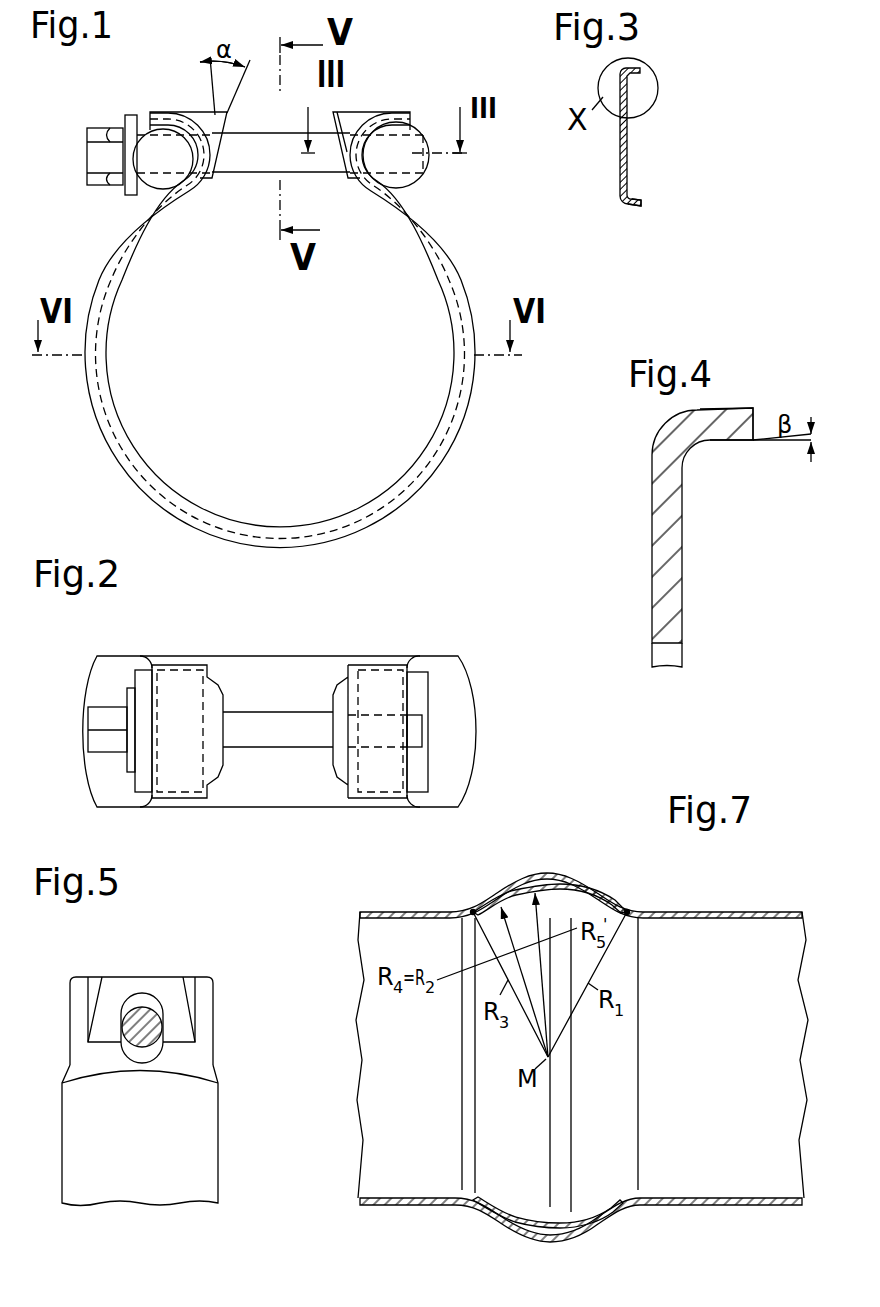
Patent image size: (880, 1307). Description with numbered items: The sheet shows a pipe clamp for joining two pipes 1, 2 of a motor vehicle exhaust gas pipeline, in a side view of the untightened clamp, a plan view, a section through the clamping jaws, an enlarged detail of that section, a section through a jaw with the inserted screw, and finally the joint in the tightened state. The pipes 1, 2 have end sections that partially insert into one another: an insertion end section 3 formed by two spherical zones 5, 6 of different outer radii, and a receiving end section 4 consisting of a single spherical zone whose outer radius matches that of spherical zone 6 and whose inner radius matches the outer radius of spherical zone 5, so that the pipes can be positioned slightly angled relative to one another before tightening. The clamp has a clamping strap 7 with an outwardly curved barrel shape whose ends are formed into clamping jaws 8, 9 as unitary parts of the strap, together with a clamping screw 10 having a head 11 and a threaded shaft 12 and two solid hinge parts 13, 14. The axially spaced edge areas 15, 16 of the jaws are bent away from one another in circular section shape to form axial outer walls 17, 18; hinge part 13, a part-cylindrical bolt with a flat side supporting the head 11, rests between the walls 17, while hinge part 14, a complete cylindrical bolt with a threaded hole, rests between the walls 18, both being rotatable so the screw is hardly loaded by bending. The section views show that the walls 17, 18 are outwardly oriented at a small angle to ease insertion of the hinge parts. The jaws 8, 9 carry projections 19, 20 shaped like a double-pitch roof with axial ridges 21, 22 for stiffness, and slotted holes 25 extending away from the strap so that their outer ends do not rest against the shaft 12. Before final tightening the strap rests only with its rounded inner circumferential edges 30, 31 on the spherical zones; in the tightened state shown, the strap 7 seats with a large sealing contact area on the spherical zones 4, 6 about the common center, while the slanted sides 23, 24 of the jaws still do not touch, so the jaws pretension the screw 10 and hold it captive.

In FIG. 7, the pipe 1 is at (418, 910).
In FIG. 7, the pipe 2 is at (731, 893).
In FIG. 7, the insertion end section 3 is at (601, 888).
In FIG. 7, the receiving end section 4 is at (513, 889).
In FIG. 7, the spherical zone 5 is at (508, 897).
In FIG. 7, the spherical zone 6 is at (577, 888).
In FIG. 1, the clamping strap 7 is at (476, 427).
In FIG. 2, the clamping strap 7 is at (309, 655).
In FIG. 5, the clamping strap 7 is at (229, 1170).
In FIG. 7, the clamping strap 7 is at (542, 873).
In FIG. 1, the clamping jaw 8 is at (171, 109).
In FIG. 2, the clamping jaw 8 is at (181, 660).
In FIG. 5, the clamping jaw 8 is at (69, 1018).
In FIG. 1, the clamping jaw 9 is at (384, 107).
In FIG. 3, the clamping jaw 9 is at (619, 171).
In FIG. 4, the clamping jaw 9 is at (652, 539).
In FIG. 2, the clamping jaw 9 is at (402, 660).
In FIG. 1, the clamping screw 10 is at (228, 189).
In FIG. 2, the clamping screw 10 is at (241, 700).
In FIG. 1, the head 11 is at (122, 130).
In FIG. 2, the head 11 is at (105, 707).
In FIG. 1, the shaft 12 is at (217, 138).
In FIG. 2, the shaft 12 is at (296, 712).
In FIG. 5, the shaft 12 is at (121, 1050).
In FIG. 1, the hinge part 13 is at (160, 175).
In FIG. 1, the hinge part 14 is at (413, 185).
In FIG. 1, the edge area 15 is at (200, 127).
In FIG. 2, the edge area 15 is at (210, 668).
In FIG. 5, the edge area 15 is at (77, 977).
In FIG. 1, the edge area 16 is at (342, 157).
In FIG. 2, the edge area 16 is at (335, 665).
In FIG. 1, the axial outer wall 17 is at (193, 142).
In FIG. 2, the axial outer wall 17 is at (170, 665).
In FIG. 5, the axial outer wall 17 is at (70, 1030).
In FIG. 1, the axial outer wall 18 is at (380, 152).
In FIG. 3, the axial outer wall 18 is at (633, 206).
In FIG. 4, the axial outer wall 18 is at (731, 408).
In FIG. 2, the axial outer wall 18 is at (371, 665).
In FIG. 1, the projection 19 is at (230, 118).
In FIG. 2, the projection 19 is at (218, 775).
In FIG. 1, the projection 20 is at (352, 152).
In FIG. 2, the projection 20 is at (341, 772).
In FIG. 1, the ridge 21 is at (230, 115).
In FIG. 2, the ridge 21 is at (222, 757).
In FIG. 5, the ridge 21 is at (160, 985).
In FIG. 2, the ridge 22 is at (334, 757).
In FIG. 1, the slanted side 23 is at (222, 143).
In FIG. 5, the slanted side 23 is at (127, 985).
In FIG. 1, the slanted side 24 is at (332, 152).
In FIG. 5, the slotted hole 25 is at (162, 1005).
In FIG. 7, the inner circumferential edge 30 is at (630, 906).
In FIG. 7, the inner circumferential edge 31 is at (473, 907).